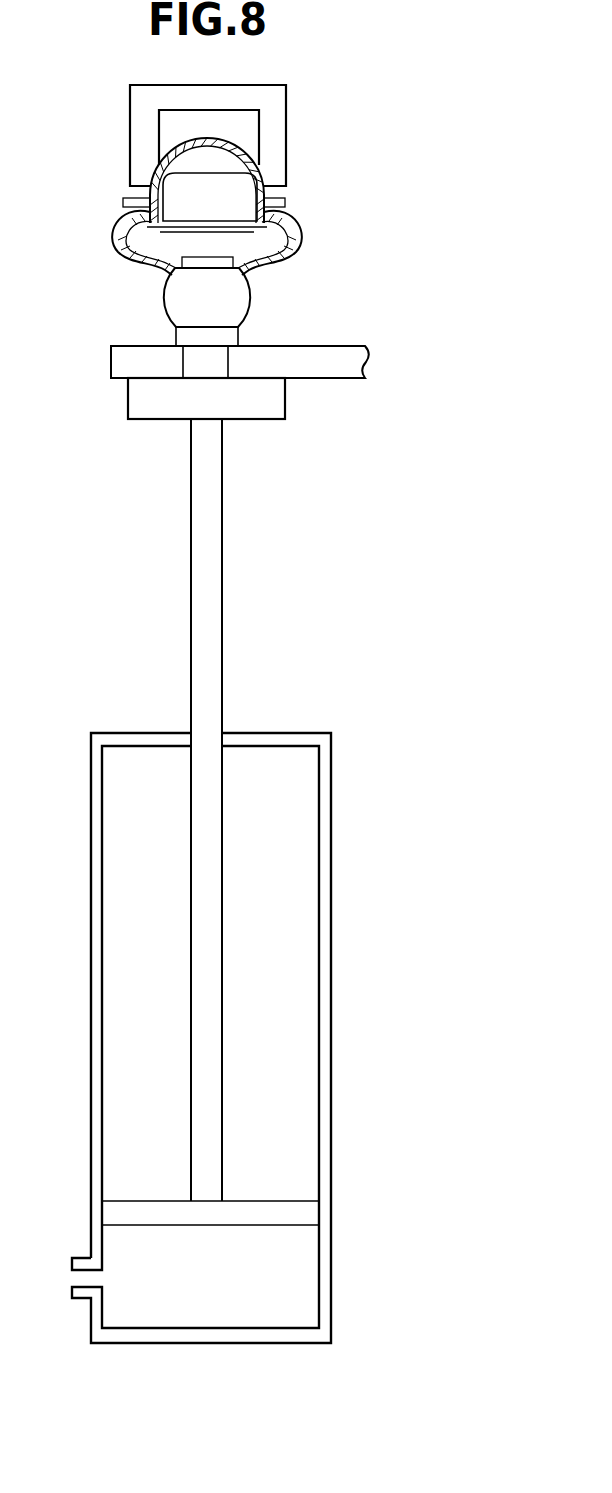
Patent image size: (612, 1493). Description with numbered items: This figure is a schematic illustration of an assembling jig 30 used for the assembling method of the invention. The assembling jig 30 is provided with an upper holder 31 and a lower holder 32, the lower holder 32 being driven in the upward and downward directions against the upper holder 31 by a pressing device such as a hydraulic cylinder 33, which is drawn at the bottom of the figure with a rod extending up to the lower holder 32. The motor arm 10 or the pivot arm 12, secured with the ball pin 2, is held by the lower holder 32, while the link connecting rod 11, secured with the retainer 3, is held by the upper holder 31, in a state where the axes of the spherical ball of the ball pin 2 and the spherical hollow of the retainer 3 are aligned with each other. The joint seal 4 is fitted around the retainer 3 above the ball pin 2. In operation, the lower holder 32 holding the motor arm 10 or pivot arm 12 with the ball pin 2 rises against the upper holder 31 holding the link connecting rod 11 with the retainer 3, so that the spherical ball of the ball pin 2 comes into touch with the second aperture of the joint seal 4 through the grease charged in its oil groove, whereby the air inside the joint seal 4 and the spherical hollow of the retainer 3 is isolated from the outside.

The ball pin 2 is at (238, 305).
The retainer 3 is at (178, 153).
The joint seal 4 is at (295, 237).
The motor arm 10 is at (289, 347).
The link connecting rod 11 is at (287, 192).
The pivot arm 12 is at (345, 347).
The assembling jig 30 is at (357, 632).
The upper holder 31 is at (277, 119).
The lower holder 32 is at (165, 408).
The hydraulic cylinder 33 is at (332, 895).